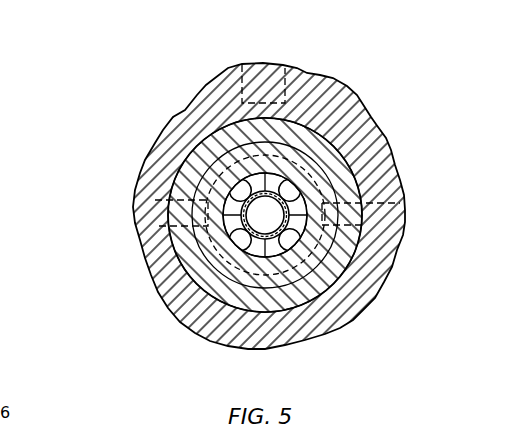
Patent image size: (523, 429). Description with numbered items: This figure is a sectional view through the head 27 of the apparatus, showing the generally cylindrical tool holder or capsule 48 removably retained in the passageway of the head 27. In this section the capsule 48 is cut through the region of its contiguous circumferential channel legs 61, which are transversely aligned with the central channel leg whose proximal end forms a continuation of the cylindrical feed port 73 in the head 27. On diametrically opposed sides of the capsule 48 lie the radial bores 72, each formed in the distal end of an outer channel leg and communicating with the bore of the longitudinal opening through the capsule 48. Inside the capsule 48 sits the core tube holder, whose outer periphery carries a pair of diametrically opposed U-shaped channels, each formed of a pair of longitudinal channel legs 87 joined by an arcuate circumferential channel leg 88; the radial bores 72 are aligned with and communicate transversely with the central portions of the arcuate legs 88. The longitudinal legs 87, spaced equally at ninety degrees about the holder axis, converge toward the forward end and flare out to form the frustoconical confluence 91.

The head 27 is at (350, 300).
The circumferential channel legs 61 is at (315, 92).
The arcuate circumferential channel leg 88 is at (405, 158).
The tool holder or capsule 48 is at (345, 243).
The longitudinal channel legs 87 is at (298, 246).
The frustoconical confluence 91 is at (290, 242).
The radial bore 72 is at (155, 200).
The cylindrical feed port 73 is at (250, 63).